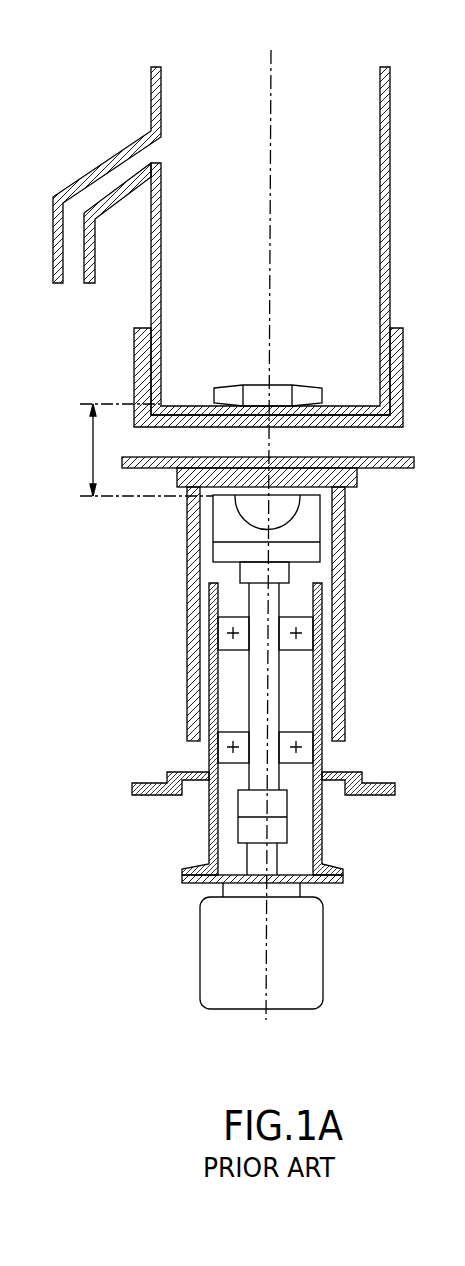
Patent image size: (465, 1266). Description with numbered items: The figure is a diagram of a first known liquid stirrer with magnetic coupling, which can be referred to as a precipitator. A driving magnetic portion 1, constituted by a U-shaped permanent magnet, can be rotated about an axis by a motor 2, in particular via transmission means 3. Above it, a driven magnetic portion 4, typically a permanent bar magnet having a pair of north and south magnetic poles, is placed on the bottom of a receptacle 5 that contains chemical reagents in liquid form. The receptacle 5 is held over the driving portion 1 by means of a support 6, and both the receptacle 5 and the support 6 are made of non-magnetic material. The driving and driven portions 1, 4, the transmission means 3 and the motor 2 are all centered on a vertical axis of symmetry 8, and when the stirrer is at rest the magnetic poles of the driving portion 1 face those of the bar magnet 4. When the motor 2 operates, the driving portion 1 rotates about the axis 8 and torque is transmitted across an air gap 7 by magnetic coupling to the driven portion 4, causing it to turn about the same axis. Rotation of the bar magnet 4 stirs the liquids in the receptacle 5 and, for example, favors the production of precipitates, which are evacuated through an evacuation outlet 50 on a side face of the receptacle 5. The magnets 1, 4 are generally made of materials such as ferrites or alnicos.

The driving magnetic portion 1 is at (338, 528).
The motor 2 is at (325, 947).
The transmission means 3 is at (345, 691).
The driven magnetic portion 4 is at (283, 385).
The receptacle 5 is at (392, 268).
The support 6 is at (403, 378).
The air gap 7 is at (138, 450).
The vertical axis of symmetry 8 is at (266, 130).
The evacuation outlet 50 is at (53, 210).